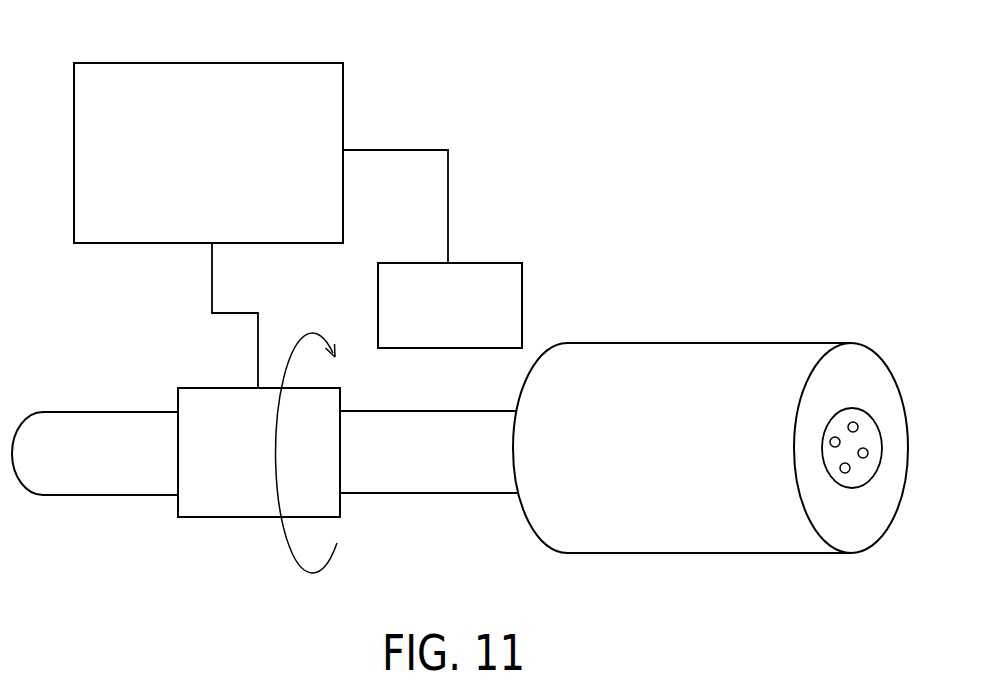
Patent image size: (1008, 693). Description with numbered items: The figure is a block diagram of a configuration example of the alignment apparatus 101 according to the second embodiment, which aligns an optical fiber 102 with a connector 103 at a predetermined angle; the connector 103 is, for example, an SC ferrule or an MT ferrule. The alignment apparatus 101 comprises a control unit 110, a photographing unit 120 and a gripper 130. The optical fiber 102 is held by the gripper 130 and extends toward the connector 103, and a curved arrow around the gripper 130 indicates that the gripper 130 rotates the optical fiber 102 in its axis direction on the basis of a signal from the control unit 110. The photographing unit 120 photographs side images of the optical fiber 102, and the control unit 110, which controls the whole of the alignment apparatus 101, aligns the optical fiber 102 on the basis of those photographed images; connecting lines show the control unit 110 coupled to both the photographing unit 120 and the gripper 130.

The alignment apparatus 101 is at (501, 95).
The optical fiber 102 is at (66, 411).
The connector 103 is at (753, 343).
The control unit 110 is at (343, 78).
The photographing unit 120 is at (522, 300).
The gripper 130 is at (190, 388).